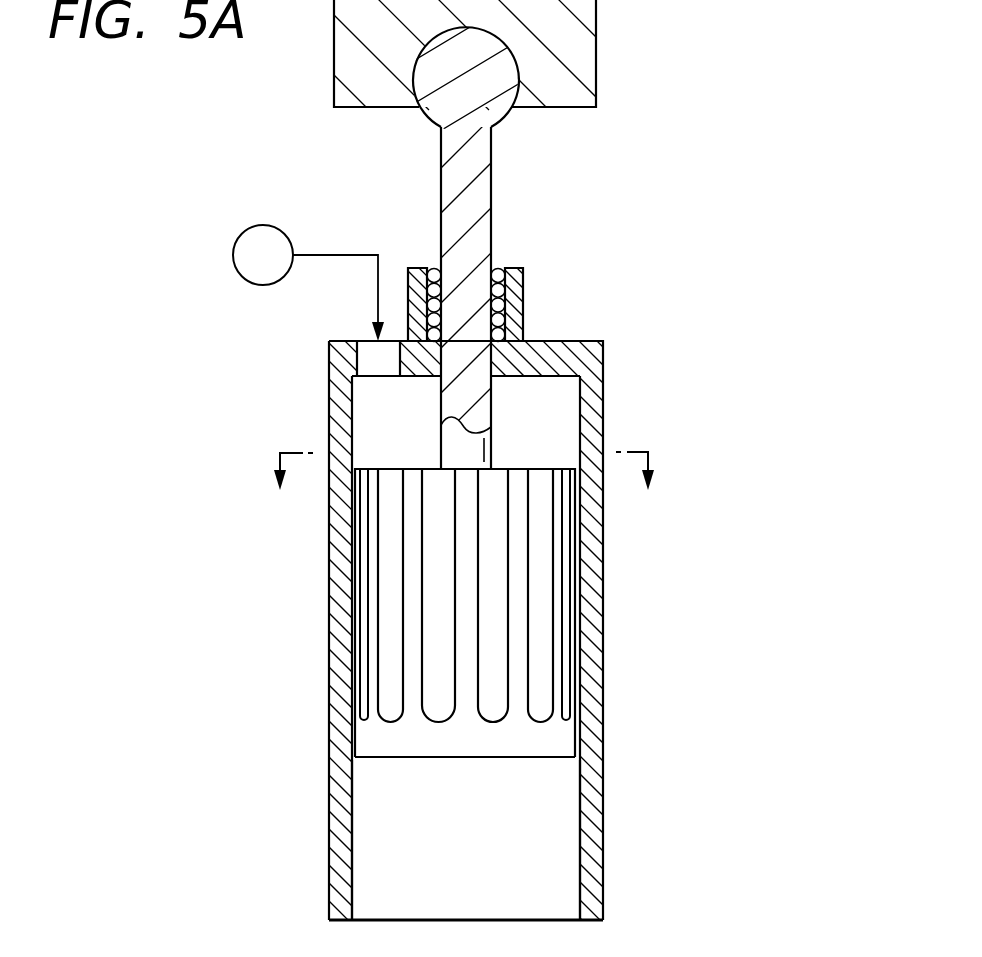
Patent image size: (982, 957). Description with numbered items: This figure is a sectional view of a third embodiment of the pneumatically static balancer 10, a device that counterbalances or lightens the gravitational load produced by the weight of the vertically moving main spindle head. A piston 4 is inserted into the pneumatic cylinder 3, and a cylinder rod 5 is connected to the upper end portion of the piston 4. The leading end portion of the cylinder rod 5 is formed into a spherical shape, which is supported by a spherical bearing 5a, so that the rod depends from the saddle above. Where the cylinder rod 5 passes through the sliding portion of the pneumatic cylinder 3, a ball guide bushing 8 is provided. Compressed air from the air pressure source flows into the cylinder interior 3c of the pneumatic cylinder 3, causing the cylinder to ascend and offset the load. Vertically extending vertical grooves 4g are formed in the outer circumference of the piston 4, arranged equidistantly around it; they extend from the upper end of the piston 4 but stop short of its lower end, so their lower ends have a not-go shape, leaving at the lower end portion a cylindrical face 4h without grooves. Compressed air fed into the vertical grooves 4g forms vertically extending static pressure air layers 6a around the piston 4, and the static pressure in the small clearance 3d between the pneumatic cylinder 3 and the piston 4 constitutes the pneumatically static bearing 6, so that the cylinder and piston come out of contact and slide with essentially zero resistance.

The pneumatically static balancer 10 is at (702, 166).
The pneumatic cylinder 3 is at (603, 352).
The cylinder interior 3c is at (558, 424).
The small clearance 3d is at (580, 732).
The piston 4 is at (560, 609).
The vertical grooves 4g is at (392, 570).
The cylindrical face 4h is at (373, 744).
The cylinder rod 5 is at (500, 225).
The spherical bearing 5a is at (521, 76).
The pneumatically static bearing 6 is at (577, 698).
The static pressure air layers 6a is at (495, 580).
The ball guide bushing 8 is at (495, 288).